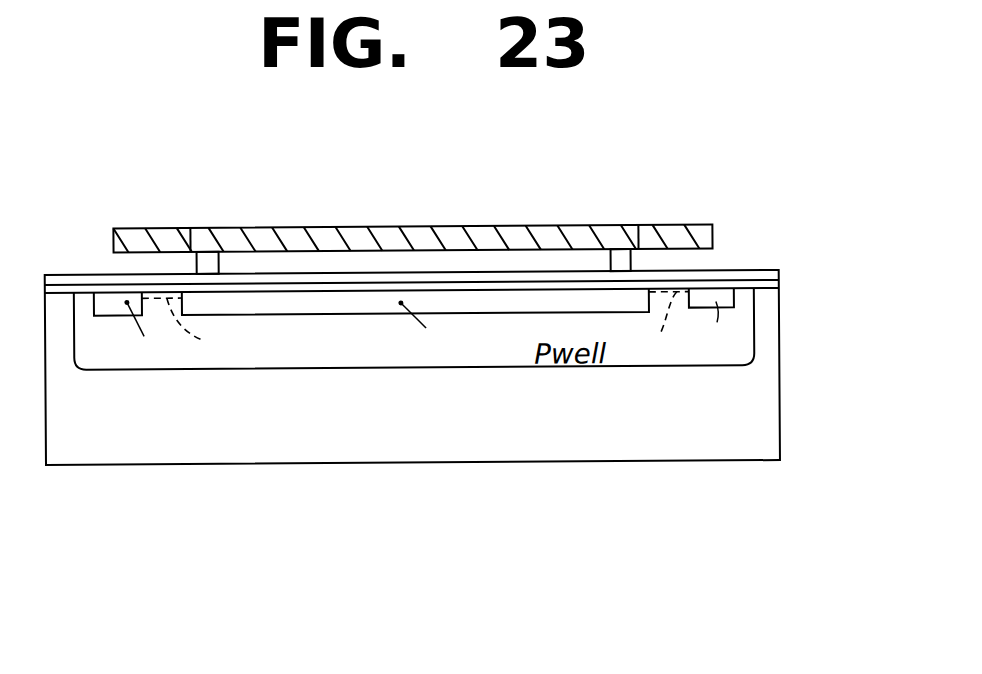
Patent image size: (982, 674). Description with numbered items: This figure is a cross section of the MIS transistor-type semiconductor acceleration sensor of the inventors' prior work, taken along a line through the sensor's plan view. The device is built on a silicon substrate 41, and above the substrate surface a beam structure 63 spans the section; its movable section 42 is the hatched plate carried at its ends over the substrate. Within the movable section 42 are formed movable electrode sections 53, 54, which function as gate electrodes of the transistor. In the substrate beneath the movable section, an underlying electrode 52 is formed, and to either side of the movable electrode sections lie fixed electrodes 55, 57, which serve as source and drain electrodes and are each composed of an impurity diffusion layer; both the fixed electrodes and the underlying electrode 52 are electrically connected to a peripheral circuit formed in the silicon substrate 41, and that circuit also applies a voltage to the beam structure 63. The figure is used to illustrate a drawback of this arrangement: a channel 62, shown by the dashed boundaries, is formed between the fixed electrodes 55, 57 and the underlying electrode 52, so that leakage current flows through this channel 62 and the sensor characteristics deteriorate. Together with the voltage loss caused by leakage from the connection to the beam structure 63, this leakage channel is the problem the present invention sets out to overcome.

The silicon substrate 41 is at (772, 407).
The movable section 42 is at (453, 228).
The underlying electrode 52 is at (307, 310).
The movable electrode section 53 is at (152, 230).
The movable electrode section 54 is at (690, 229).
The fixed electrode 55 is at (112, 316).
The fixed electrode 57 is at (697, 312).
The channel 62 is at (416, 332).
The beam structure 63 is at (580, 229).